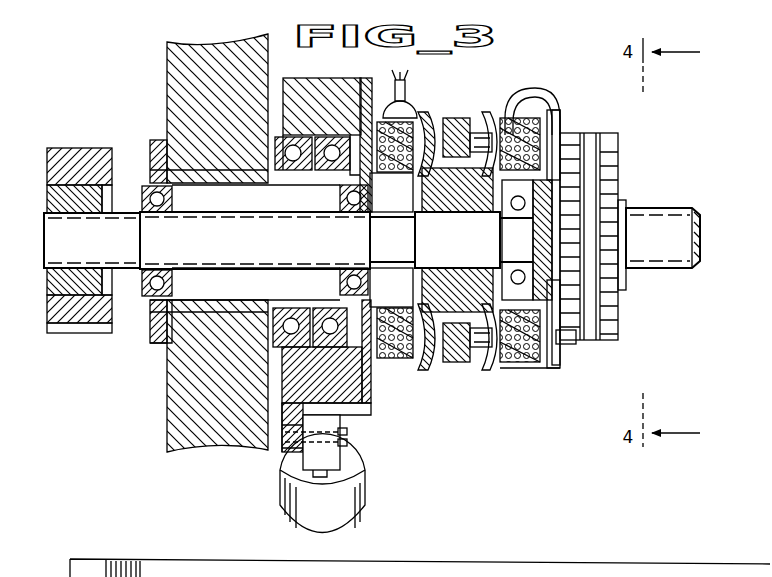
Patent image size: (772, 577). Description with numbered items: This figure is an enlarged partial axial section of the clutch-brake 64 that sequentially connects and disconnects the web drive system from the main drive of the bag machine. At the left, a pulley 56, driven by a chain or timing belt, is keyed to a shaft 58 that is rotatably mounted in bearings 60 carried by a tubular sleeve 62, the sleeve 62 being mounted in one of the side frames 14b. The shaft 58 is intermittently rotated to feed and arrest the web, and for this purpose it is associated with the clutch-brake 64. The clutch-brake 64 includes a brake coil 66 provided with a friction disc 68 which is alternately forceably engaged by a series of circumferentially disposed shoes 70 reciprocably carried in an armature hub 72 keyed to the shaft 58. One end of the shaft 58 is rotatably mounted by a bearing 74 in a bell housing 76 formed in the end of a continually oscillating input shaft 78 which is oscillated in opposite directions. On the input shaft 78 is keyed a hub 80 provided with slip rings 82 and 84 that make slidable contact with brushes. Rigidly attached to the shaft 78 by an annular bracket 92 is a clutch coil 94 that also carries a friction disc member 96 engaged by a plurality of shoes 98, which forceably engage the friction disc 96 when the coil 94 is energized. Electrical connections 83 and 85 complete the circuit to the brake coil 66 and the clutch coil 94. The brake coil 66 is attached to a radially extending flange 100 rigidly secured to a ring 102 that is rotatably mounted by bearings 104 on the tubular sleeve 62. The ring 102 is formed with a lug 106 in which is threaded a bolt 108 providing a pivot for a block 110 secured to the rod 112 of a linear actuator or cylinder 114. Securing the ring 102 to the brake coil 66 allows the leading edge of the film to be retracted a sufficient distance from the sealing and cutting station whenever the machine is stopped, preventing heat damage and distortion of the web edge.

The side frame 14b is at (166, 385).
The pulley 56 is at (72, 150).
The shaft 58 is at (215, 211).
The bearings 60 is at (340, 197).
The tubular sleeve 62 is at (172, 304).
The clutch-brake 64 is at (558, 112).
The brake coil 66 is at (416, 112).
The friction disc 68 is at (416, 357).
The shoes 70 is at (432, 128).
The armature hub 72 is at (458, 358).
The bearing 74 is at (497, 215).
The bell housing 76 is at (572, 178).
The input shaft 78 is at (672, 209).
The hub 80 is at (622, 203).
The slip ring 82 is at (556, 185).
The electrical connection 83 is at (404, 96).
The slip ring 84 is at (578, 140).
The electrical connection 85 is at (532, 96).
The annular bracket 92 is at (565, 342).
The clutch coil 94 is at (540, 356).
The friction disc member 96 is at (497, 360).
The shoes 98 is at (488, 114).
The radially extending flange 100 is at (370, 92).
The ring 102 is at (362, 400).
The bearings 104 is at (326, 307).
The lug 106 is at (297, 452).
The bolt 108 is at (347, 431).
The block 110 is at (332, 457).
The rod 112 is at (300, 472).
The linear actuator 114 is at (356, 477).